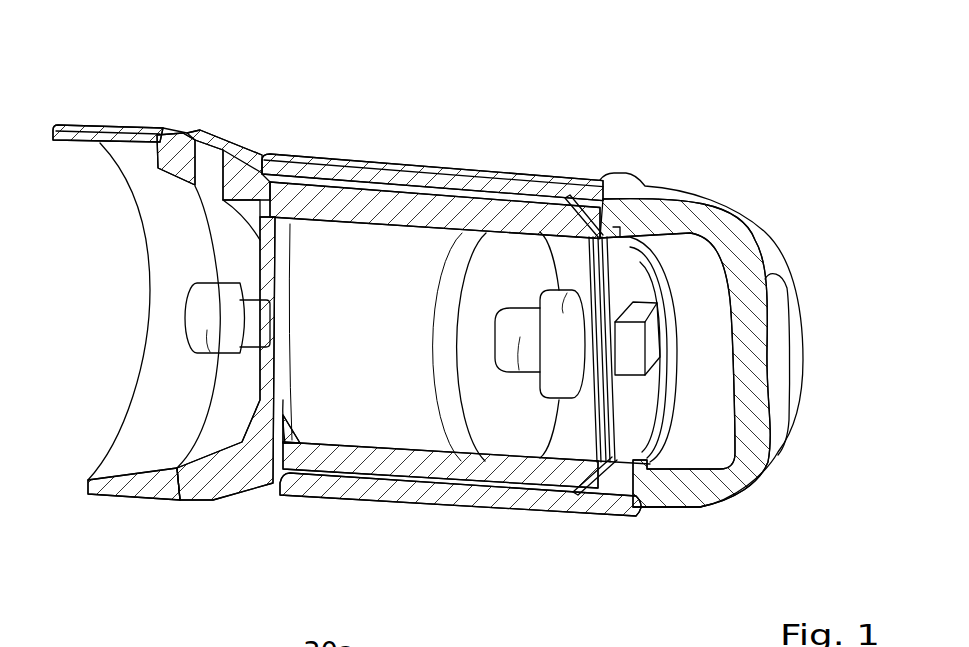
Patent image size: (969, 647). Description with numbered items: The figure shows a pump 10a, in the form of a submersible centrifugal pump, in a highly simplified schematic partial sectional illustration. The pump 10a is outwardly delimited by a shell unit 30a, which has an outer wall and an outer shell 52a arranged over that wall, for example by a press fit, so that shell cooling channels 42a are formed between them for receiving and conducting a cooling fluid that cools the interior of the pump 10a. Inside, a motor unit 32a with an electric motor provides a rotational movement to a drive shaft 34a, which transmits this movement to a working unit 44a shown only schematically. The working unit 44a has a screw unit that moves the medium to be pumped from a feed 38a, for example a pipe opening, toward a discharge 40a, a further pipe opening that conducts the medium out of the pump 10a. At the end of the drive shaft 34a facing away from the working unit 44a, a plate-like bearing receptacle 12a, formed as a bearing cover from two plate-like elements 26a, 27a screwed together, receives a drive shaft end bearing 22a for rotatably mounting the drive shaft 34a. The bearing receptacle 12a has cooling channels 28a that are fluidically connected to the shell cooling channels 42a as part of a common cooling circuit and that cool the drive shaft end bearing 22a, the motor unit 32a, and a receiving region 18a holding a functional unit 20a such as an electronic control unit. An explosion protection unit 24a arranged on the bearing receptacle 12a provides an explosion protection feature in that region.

The pump 10a is at (517, 122).
The bearing receptacle 12a is at (580, 413).
The receiving region 18a is at (632, 396).
The functional unit 20a is at (630, 298).
The drive shaft end bearing 22a is at (572, 215).
The explosion protection unit 24a is at (605, 165).
The plate-like element 26a is at (613, 414).
The plate-like element 27a is at (623, 447).
The cooling channels 28a is at (613, 423).
The shell unit 30a is at (417, 158).
The motor unit 32a is at (347, 248).
The drive shaft 34a is at (520, 343).
The feed 38a is at (88, 133).
The discharge 40a is at (213, 167).
The shell cooling channels 42a is at (300, 168).
The working unit 44a is at (190, 380).
The outer shell 52a is at (452, 167).